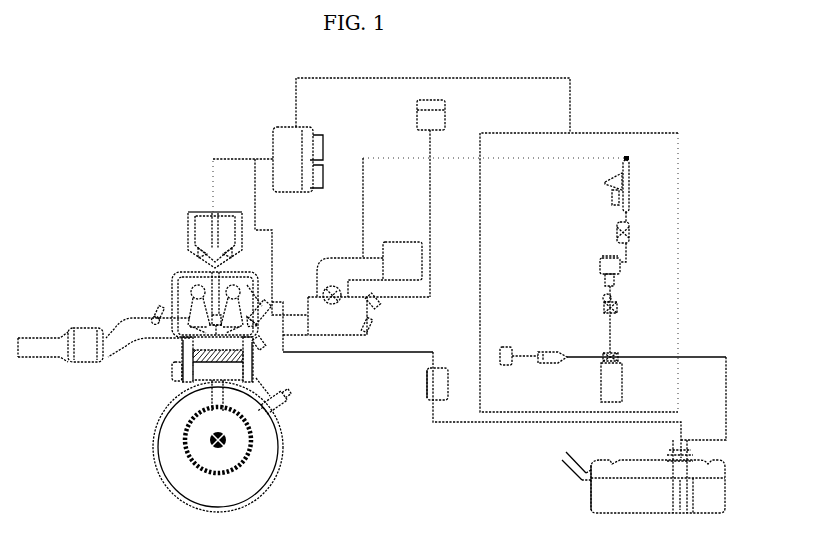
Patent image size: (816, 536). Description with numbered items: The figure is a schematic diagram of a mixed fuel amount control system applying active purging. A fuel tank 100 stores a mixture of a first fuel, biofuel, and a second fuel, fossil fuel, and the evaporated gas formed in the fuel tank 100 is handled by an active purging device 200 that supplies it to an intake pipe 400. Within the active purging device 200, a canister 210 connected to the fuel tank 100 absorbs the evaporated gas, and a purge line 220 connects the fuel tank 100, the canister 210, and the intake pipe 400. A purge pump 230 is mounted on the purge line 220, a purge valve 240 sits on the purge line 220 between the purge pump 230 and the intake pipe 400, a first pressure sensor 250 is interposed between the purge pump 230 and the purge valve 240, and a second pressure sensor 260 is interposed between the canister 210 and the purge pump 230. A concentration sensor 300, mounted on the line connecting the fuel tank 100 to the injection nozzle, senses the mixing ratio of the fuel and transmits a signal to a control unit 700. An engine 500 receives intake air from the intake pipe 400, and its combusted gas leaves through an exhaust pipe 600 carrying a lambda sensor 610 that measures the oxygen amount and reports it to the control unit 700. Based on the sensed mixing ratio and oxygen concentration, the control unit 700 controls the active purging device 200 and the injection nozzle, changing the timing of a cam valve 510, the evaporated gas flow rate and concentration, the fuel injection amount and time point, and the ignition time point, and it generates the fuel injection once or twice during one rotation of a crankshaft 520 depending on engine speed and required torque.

The fuel tank 100 is at (708, 498).
The active purging device 200 is at (680, 230).
The canister 210 is at (628, 388).
The purge line 220 is at (620, 214).
The purge pump 230 is at (599, 270).
The purge valve 240 is at (603, 183).
The first pressure sensor 250 is at (615, 232).
The second pressure sensor 260 is at (600, 306).
The concentration sensor 300 is at (425, 385).
The intake pipe 400 is at (342, 257).
The engine 500 is at (180, 270).
The cam valve 510 is at (262, 348).
The crankshaft 520 is at (246, 460).
The exhaust pipe 600 is at (127, 328).
The lambda sensor 610 is at (154, 306).
The control unit 700 is at (283, 127).